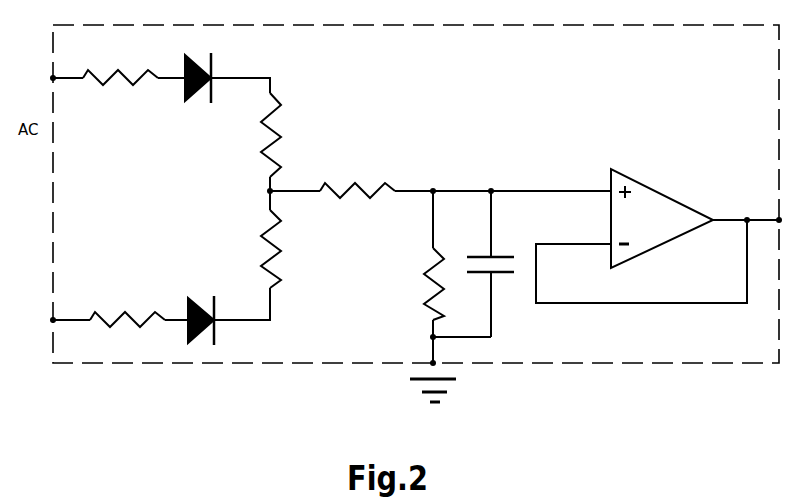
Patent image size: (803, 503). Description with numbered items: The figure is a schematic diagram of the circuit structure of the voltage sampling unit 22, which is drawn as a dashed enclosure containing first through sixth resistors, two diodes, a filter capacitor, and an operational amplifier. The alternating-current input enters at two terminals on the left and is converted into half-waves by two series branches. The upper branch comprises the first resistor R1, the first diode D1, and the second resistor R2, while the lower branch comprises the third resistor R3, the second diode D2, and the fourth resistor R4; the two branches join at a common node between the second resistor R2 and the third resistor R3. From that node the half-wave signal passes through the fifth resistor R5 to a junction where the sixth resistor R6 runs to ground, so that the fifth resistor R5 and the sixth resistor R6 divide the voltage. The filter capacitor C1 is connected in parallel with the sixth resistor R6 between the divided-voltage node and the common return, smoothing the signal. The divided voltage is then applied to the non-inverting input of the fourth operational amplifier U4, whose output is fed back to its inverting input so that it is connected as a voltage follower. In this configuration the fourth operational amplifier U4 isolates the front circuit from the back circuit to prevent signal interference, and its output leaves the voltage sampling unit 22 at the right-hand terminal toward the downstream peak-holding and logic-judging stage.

The voltage sampling unit 22 is at (573, 338).
The first resistor R1 is at (120, 94).
The first diode D1 is at (199, 95).
The second resistor R2 is at (285, 135).
The third resistor R3 is at (285, 249).
The fourth resistor R4 is at (127, 304).
The second diode D2 is at (201, 306).
The fifth resistor R5 is at (357, 177).
The sixth resistor R6 is at (421, 284).
The filter capacitor C1 is at (496, 248).
The fourth operational amplifier U4 is at (662, 218).